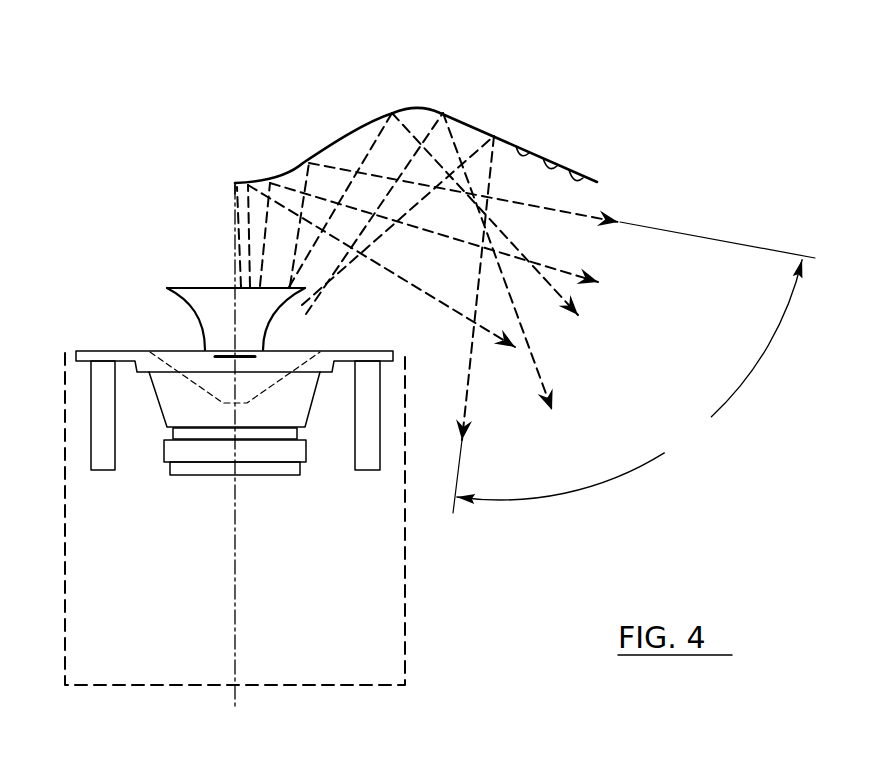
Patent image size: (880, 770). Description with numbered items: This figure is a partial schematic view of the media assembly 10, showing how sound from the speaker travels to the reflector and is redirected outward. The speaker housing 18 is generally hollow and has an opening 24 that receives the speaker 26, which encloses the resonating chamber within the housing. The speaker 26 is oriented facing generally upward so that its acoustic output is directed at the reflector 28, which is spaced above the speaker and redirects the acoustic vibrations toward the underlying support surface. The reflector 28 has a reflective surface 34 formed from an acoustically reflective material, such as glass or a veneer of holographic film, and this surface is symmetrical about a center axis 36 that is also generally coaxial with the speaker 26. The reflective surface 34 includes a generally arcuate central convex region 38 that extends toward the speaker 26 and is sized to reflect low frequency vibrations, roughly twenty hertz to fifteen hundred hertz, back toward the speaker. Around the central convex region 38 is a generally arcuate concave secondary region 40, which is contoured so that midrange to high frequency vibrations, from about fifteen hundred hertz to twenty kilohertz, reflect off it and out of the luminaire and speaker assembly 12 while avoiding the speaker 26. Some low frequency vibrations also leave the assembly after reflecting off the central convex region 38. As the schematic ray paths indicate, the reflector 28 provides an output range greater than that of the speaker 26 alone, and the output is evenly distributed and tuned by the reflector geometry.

The media assembly 10 is at (492, 68).
The luminaire and speaker assembly 12 is at (612, 100).
The speaker housing 18 is at (405, 602).
The opening 24 is at (102, 350).
The speaker 26 is at (127, 350).
The reflector 28 is at (580, 178).
The reflective surface 34 is at (523, 148).
The center axis 36 is at (237, 703).
The central convex region 38 is at (235, 185).
The secondary region 40 is at (552, 162).